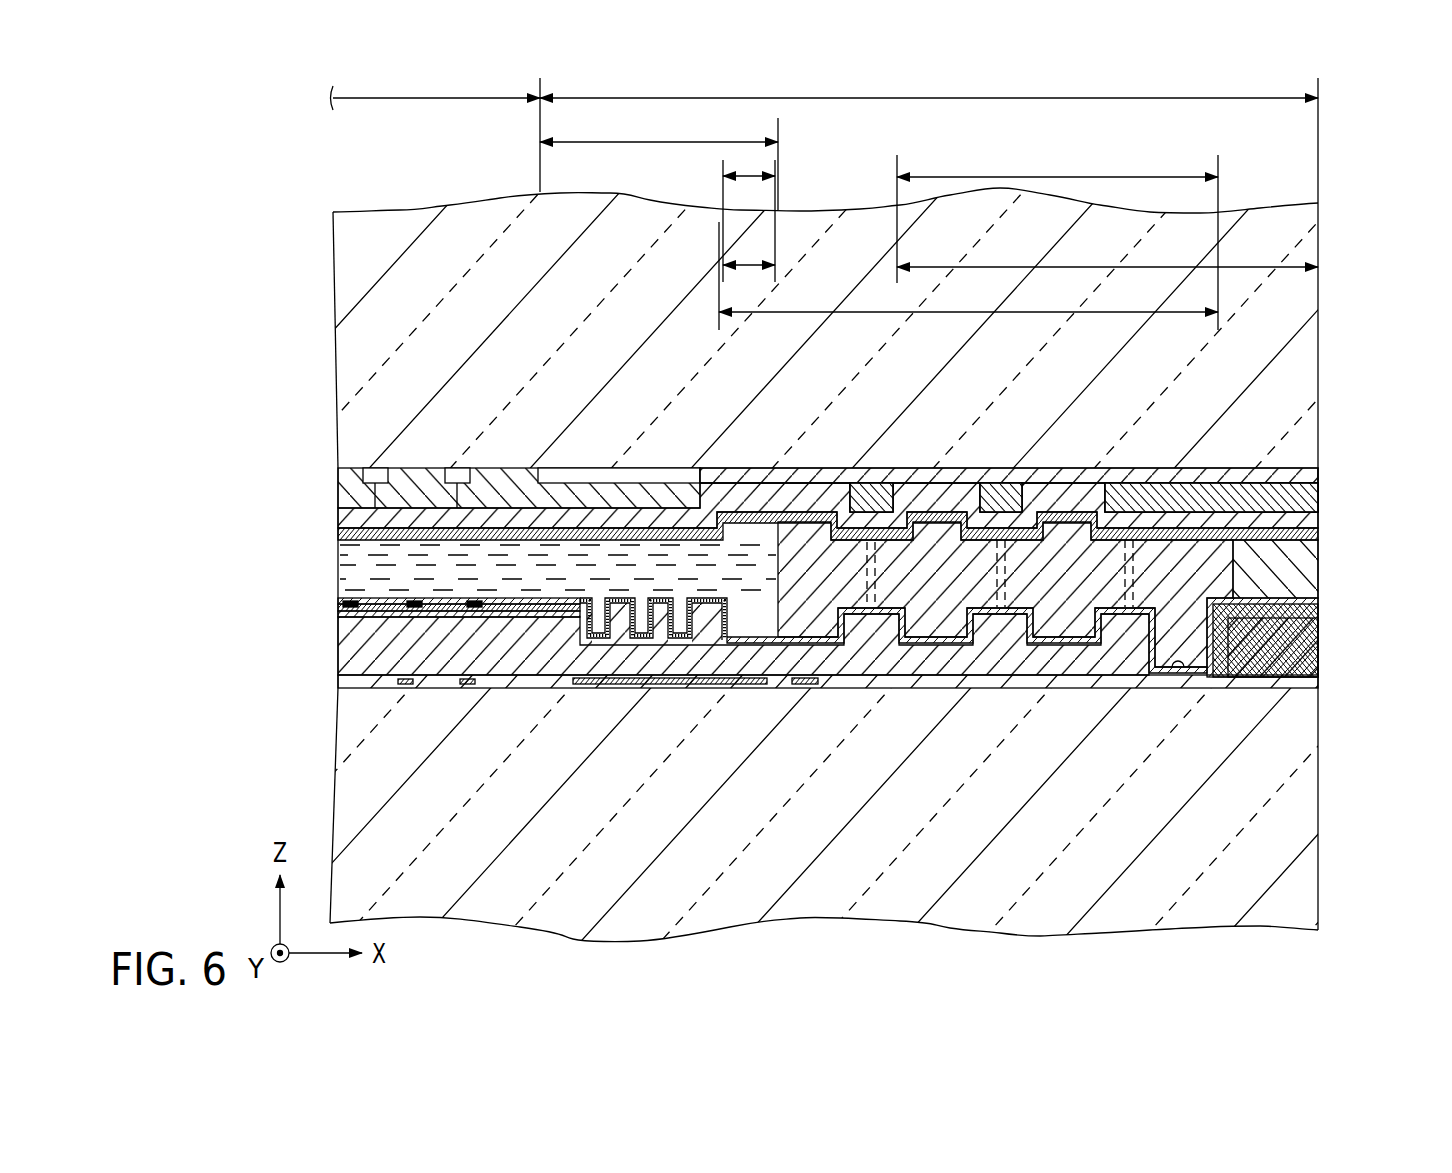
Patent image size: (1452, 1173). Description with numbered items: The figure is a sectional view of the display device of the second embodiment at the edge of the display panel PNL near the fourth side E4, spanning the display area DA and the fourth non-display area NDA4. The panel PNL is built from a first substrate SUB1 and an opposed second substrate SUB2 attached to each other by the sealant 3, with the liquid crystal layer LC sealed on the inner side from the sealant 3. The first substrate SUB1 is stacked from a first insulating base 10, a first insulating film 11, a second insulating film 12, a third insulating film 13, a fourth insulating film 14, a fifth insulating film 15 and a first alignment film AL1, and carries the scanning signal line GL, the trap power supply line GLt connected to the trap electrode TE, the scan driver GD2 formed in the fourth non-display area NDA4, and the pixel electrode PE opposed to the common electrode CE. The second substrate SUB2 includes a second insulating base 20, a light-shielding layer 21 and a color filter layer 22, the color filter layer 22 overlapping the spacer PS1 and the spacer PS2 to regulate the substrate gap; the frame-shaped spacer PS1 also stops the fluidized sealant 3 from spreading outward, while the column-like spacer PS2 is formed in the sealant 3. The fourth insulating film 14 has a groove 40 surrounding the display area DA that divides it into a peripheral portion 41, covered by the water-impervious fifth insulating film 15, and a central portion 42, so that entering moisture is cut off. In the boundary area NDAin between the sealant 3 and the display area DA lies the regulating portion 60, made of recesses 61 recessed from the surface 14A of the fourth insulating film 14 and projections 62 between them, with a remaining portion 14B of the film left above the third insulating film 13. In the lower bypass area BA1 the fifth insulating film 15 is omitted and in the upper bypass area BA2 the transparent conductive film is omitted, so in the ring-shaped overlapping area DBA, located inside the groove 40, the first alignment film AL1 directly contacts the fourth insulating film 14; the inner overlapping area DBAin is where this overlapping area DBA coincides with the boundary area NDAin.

The second insulating base 20 is at (338, 304).
The light-shielding layer 21 is at (376, 470).
The color filter layer 22 is at (408, 470).
The sealant 3 is at (808, 535).
The liquid crystal layer LC is at (345, 558).
The spacer PS1 is at (1308, 565).
The spacer PS2 is at (877, 577).
The fourth insulating film 14 is at (1324, 645).
The surface of the fourth insulating film 14A is at (563, 605).
The portion of the fourth insulating film 14B is at (588, 648).
The first alignment film AL1 is at (545, 598).
The fifth insulating film 15 is at (1318, 620).
The peripheral portion 41 is at (1318, 672).
The central portion 42 is at (1062, 664).
The groove 40 is at (1178, 672).
The common electrode CE is at (344, 625).
The pixel electrode PE is at (482, 592).
The regulating portion 60 is at (676, 594).
The recess 61 is at (680, 645).
The projection 62 is at (647, 600).
The trap electrode TE is at (757, 646).
The trap power supply line GLt is at (795, 688).
The scan driver GD2 is at (702, 688).
The scanning signal line GL is at (468, 687).
The first insulating film 11 is at (775, 683).
The second insulating film 12 is at (775, 683).
The third insulating film 13 is at (350, 683).
The first insulating base 10 is at (346, 793).
The first substrate SUB1 is at (1324, 738).
The second substrate SUB2 is at (1322, 358).
The fourth side E4 is at (1318, 812).
The display panel PNL is at (1326, 268).
The display area DA is at (436, 87).
The fourth non-display area NDA4 is at (929, 133).
The boundary area NDAin is at (659, 161).
The inner overlapping area DBAin is at (750, 172).
The overlapping area DBA is at (1057, 238).
The upper bypass area BA2 is at (1020, 249).
The lower bypass area BA1 is at (968, 276).